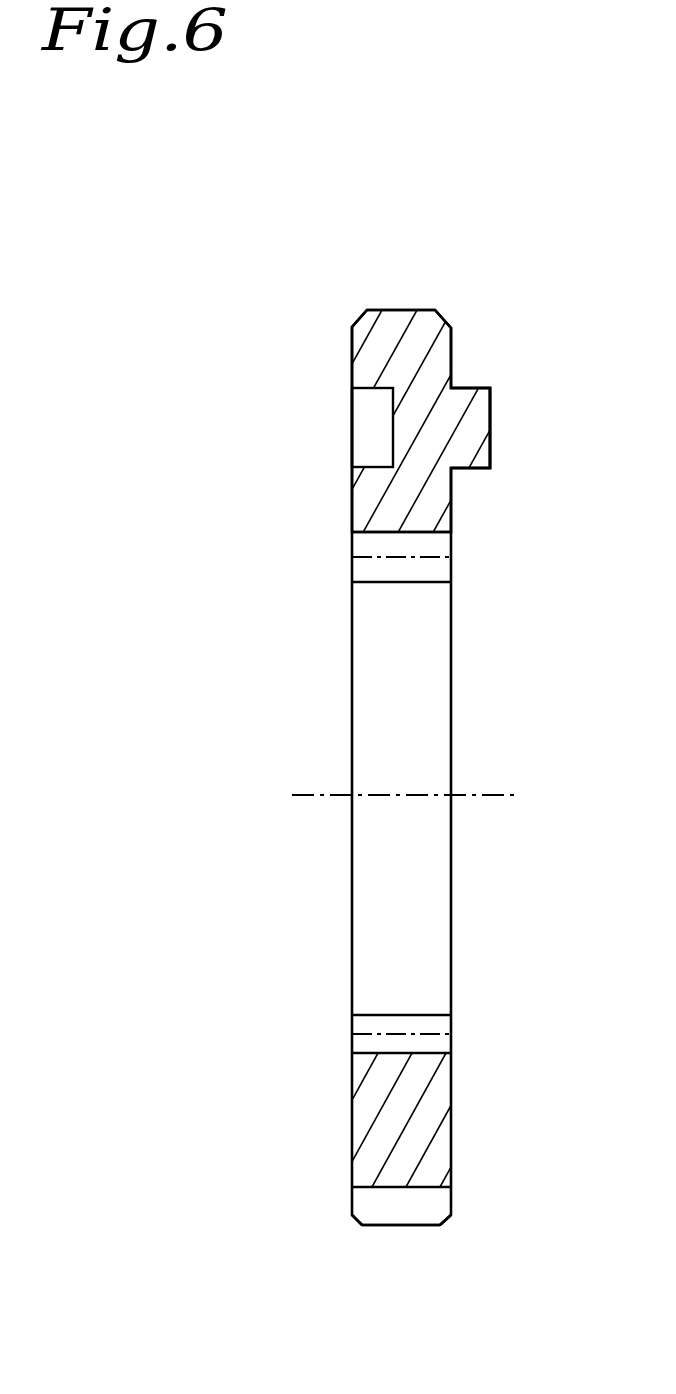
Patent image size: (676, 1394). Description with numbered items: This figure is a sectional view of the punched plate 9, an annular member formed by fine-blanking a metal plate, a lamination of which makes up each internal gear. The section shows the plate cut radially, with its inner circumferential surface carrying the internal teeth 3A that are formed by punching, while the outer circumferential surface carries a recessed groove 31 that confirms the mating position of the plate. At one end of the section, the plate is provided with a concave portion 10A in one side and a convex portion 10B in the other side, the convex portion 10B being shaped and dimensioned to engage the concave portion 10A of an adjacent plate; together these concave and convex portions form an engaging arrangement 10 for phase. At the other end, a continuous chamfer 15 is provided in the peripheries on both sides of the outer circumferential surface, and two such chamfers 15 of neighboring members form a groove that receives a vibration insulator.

The punched plate 9 is at (347, 988).
The engaging arrangement 10 is at (522, 176).
The concave portion 10A is at (473, 388).
The convex portion 10B is at (360, 443).
The internal teeth 3A is at (430, 567).
The chamfer 15 is at (352, 1218).
The recessed groove 31 is at (397, 1217).